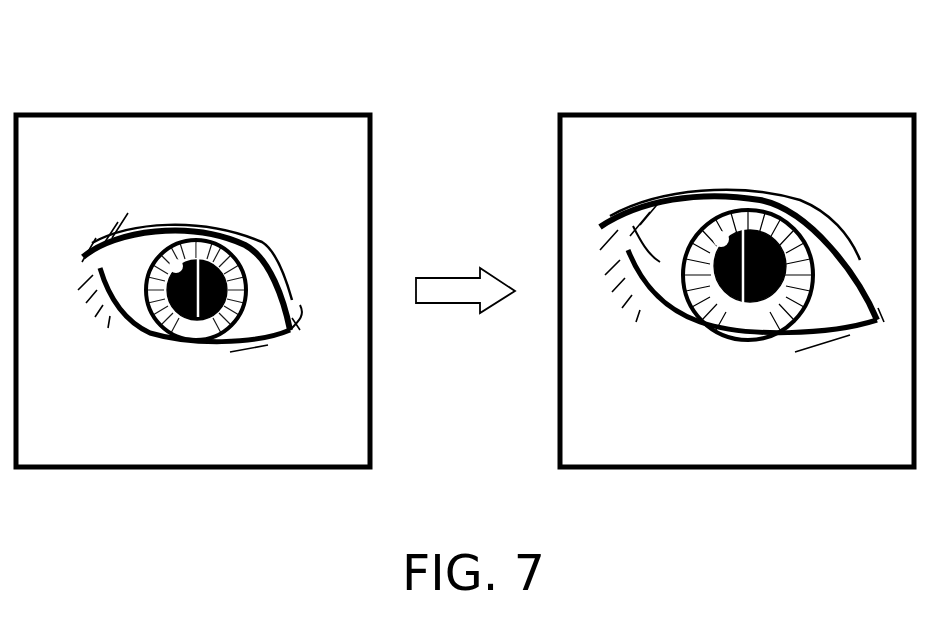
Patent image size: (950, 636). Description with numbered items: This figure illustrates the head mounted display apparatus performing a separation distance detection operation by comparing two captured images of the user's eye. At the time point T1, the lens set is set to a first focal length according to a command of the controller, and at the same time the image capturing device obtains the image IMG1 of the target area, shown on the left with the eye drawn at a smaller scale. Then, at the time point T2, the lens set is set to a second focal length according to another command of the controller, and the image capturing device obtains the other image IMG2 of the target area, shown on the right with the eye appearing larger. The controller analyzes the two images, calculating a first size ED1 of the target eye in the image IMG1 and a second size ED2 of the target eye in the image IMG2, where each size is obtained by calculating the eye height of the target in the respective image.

The time point T1 is at (79, 68).
The time point T2 is at (622, 68).
The image IMG1 is at (303, 112).
The image IMG2 is at (845, 112).
The first size ED1 is at (203, 283).
The second size ED2 is at (747, 260).